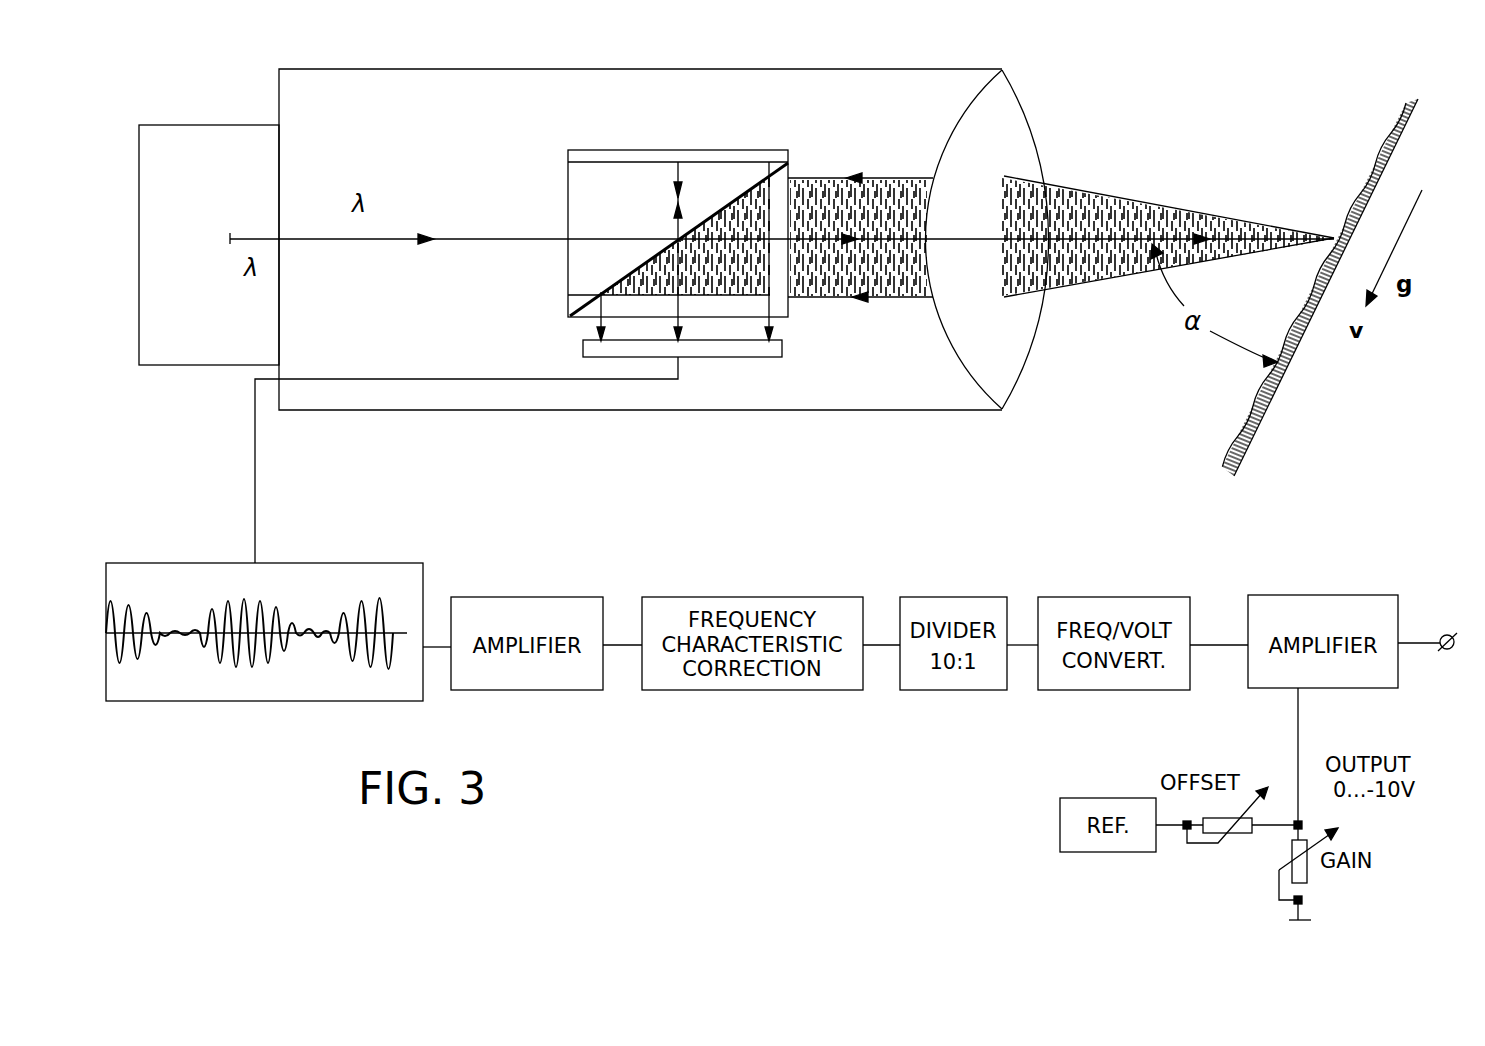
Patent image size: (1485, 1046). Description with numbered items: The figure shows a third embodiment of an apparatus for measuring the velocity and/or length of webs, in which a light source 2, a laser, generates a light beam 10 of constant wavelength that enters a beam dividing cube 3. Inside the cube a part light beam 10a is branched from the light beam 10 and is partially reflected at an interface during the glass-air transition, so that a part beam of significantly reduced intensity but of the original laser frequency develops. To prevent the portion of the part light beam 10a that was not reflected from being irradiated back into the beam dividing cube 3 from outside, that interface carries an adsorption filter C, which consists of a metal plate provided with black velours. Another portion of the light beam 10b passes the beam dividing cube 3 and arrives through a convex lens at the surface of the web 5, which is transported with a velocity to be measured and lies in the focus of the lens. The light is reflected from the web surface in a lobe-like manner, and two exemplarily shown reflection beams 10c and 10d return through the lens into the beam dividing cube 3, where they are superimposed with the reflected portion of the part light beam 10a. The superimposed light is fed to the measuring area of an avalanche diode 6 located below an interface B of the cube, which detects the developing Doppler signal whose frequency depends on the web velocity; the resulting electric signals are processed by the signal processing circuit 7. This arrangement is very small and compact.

The light source 2 is at (248, 237).
The beam dividing cube 3 is at (592, 187).
The web 5 is at (1384, 180).
The avalanche diode 6 is at (745, 350).
The signal processing circuit 7 is at (185, 572).
The light beam 10 is at (782, 224).
The part light beam 10a is at (676, 204).
The portion of the light beam 10b is at (850, 238).
The reflection beam 10c is at (1118, 199).
The reflection beam 10d is at (1130, 277).
The interface of the beam dividing cube B is at (617, 308).
The adsorption filter C is at (703, 150).